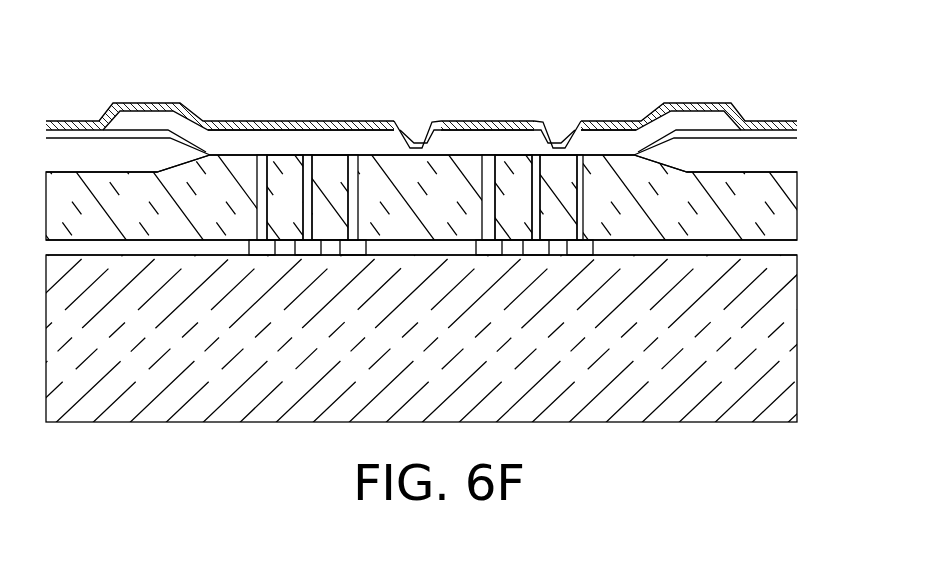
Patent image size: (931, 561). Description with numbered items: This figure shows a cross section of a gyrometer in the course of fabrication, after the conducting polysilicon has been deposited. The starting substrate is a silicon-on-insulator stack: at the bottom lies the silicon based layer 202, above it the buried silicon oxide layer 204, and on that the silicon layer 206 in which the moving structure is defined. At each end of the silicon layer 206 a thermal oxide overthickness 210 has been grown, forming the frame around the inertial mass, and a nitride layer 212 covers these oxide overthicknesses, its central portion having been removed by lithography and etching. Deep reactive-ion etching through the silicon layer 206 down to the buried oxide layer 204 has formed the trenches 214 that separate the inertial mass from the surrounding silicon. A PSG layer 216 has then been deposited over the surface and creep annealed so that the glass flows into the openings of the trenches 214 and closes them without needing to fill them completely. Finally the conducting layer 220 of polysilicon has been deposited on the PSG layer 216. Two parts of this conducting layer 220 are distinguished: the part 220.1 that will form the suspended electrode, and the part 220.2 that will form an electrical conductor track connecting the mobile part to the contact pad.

The silicon based layer 202 is at (727, 390).
The buried silicon oxide layer 204 is at (780, 247).
The silicon layer 206 is at (782, 201).
The thermal oxide overthickness 210 is at (90, 153).
The nitride layer 212 is at (183, 127).
The trenches 214 is at (322, 167).
The PSG layer 216 is at (477, 140).
The conducting layer 220 is at (277, 112).
The part of the polysilicon layer forming the electrode 220.1 is at (380, 118).
The part of the polysilicon layer forming an electrical conductor track 220.2 is at (590, 120).